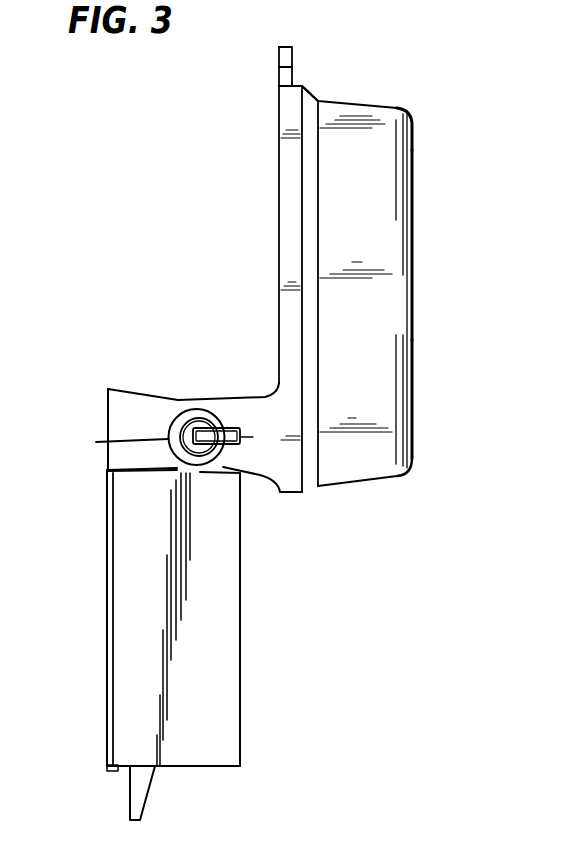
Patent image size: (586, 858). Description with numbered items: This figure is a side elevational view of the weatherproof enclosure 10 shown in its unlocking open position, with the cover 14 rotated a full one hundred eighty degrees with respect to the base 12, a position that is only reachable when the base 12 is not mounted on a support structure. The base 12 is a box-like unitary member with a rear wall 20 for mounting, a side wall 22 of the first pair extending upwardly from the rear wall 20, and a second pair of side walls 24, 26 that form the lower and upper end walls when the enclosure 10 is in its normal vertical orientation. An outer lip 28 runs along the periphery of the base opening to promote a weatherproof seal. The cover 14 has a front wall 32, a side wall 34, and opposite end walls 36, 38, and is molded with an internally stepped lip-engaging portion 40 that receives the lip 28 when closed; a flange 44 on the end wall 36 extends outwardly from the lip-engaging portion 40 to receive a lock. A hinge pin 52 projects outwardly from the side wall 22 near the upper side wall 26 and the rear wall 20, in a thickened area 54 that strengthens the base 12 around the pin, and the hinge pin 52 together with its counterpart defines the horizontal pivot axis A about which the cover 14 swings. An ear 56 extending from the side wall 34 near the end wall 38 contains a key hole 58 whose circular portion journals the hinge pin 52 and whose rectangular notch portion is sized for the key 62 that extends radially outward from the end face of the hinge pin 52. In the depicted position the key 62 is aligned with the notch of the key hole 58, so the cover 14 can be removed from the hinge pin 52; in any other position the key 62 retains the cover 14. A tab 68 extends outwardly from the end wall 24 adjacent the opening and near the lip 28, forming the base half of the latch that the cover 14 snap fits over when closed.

The weatherproof enclosure 10 is at (139, 255).
The base 12 is at (173, 654).
The cover 14 is at (418, 221).
The rear wall 20 is at (240, 651).
The side wall 22 is at (225, 698).
The side wall 24 is at (193, 767).
The side wall 26 is at (138, 391).
The outer lip 28 is at (107, 663).
The front wall 32 is at (411, 365).
The side wall 34 is at (399, 317).
The end wall 36 is at (386, 107).
The end wall 38 is at (397, 477).
The lip-engaging portion 40 is at (303, 88).
The flange 44 is at (292, 58).
The hinge pin 52 is at (214, 428).
The thickened area 54 is at (128, 474).
The ear 56 is at (243, 477).
The key hole 58 is at (96, 442).
The key 62 is at (192, 418).
The tab 68 is at (110, 771).
The pivot axis A is at (204, 440).